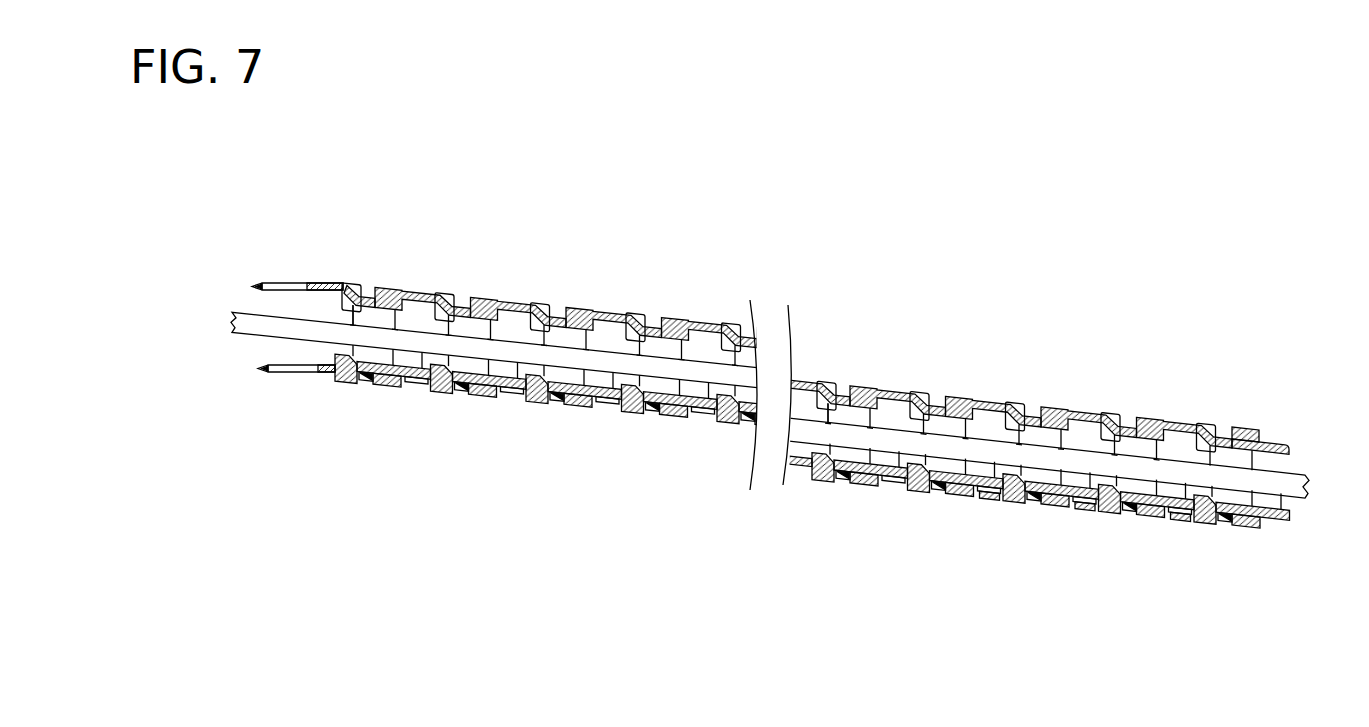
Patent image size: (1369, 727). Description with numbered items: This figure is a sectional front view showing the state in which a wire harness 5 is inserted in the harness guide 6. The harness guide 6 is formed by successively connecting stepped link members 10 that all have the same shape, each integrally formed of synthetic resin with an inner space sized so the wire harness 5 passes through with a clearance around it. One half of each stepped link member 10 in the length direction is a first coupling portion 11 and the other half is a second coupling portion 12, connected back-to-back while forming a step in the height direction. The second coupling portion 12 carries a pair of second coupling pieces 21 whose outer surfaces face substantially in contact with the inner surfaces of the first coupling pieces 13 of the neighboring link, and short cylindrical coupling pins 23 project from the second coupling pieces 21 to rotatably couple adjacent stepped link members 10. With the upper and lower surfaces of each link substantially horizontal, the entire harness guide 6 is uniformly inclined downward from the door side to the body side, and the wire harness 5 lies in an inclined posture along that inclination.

The wire harness 5 is at (513, 355).
The harness guide 6 is at (771, 390).
The stepped link member 10 is at (1028, 388).
The first coupling portion 11 is at (895, 397).
The second coupling portion 12 is at (1077, 404).
The first coupling piece 13 is at (892, 482).
The second coupling piece 21 is at (983, 492).
The coupling pin 23 is at (957, 492).